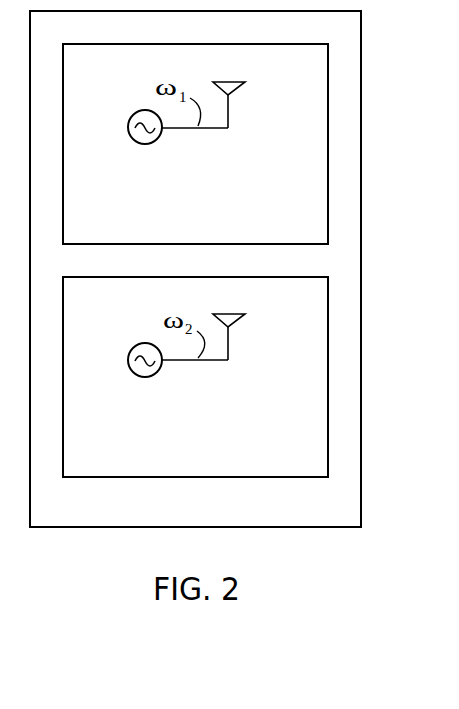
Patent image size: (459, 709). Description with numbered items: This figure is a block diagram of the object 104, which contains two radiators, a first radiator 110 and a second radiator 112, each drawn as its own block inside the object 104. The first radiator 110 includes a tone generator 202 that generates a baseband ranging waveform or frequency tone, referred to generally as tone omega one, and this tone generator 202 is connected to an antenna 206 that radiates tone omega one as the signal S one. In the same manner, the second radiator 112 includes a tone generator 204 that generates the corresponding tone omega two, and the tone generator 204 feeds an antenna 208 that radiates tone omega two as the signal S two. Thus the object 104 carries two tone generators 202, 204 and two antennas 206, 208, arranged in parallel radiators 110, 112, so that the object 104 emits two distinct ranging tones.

The object 104 is at (247, 515).
The radiator 110 is at (258, 234).
The radiator 112 is at (258, 465).
The tone generator 202 is at (134, 141).
The tone generator 204 is at (146, 377).
The antenna 206 is at (238, 87).
The antenna 208 is at (235, 322).